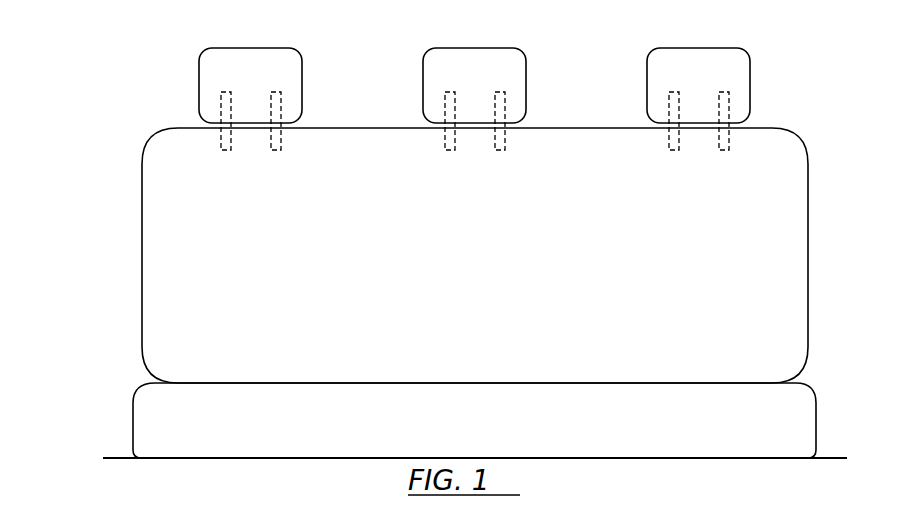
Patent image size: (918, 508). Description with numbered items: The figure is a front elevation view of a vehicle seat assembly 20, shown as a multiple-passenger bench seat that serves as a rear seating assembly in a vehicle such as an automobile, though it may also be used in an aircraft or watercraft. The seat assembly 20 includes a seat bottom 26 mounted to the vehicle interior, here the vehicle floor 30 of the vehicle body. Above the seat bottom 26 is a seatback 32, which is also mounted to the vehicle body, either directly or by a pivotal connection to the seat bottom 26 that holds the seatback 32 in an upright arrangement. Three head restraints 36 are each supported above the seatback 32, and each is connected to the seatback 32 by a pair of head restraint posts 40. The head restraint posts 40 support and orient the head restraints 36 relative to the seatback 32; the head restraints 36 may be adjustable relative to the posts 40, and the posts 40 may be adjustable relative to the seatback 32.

The vehicle seat assembly 20 is at (568, 58).
The seat bottom 26 is at (133, 412).
The vehicle floor 30 is at (120, 456).
The seatback 32 is at (140, 262).
The head restraints 36 is at (199, 82).
The head restraint posts 40 is at (220, 118).